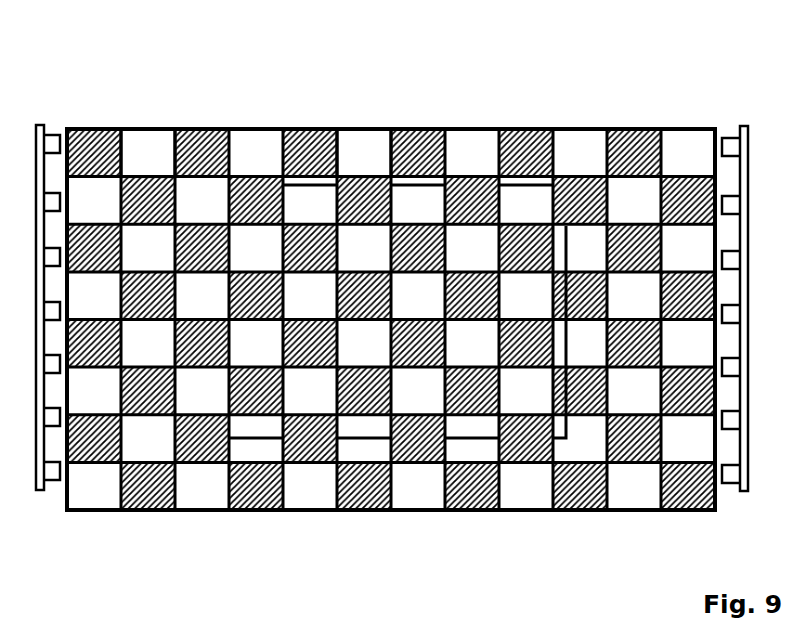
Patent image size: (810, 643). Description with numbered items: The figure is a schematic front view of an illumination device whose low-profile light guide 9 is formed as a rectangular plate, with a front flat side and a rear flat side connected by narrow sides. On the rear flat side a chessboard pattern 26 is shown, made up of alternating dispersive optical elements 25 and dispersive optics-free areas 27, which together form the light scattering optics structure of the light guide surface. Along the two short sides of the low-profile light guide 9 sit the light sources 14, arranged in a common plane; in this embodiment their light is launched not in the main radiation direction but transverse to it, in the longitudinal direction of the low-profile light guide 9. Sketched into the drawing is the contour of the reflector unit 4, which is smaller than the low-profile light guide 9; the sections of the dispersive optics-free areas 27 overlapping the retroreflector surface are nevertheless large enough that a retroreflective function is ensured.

The low-profile light guide 9 is at (276, 516).
The chessboard pattern 26 is at (594, 108).
The dispersive optical elements 25 is at (211, 130).
The dispersive optics-free areas 27 is at (148, 150).
The reflector unit 4 is at (523, 185).
The light sources 14 is at (56, 132).